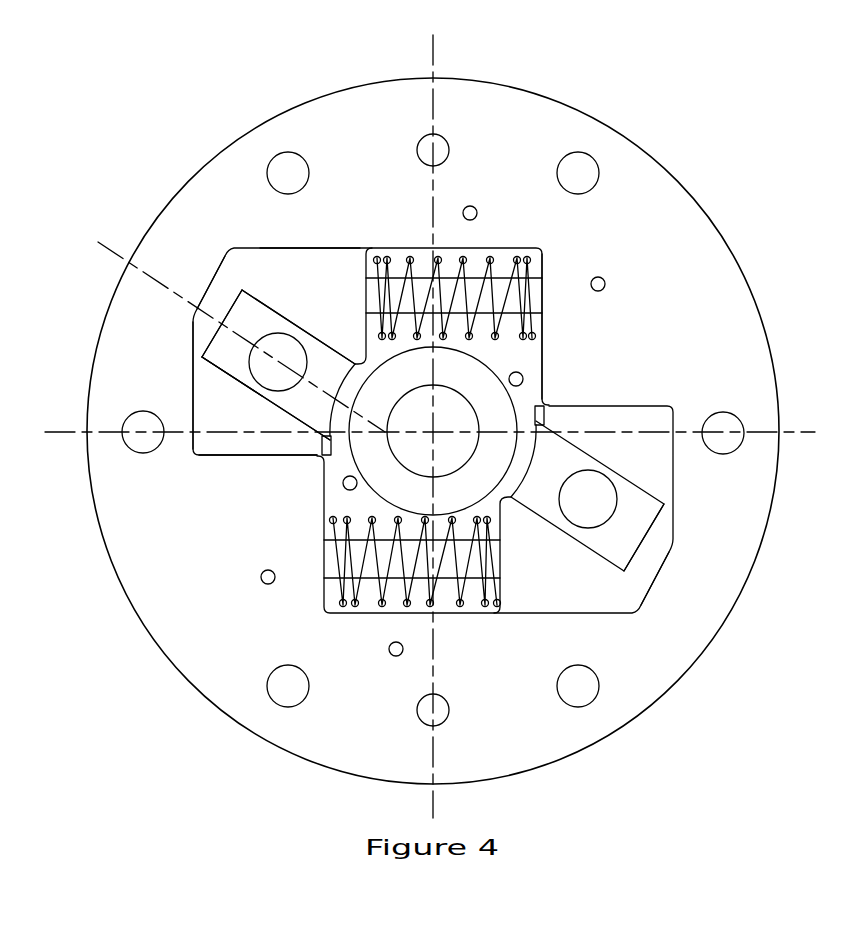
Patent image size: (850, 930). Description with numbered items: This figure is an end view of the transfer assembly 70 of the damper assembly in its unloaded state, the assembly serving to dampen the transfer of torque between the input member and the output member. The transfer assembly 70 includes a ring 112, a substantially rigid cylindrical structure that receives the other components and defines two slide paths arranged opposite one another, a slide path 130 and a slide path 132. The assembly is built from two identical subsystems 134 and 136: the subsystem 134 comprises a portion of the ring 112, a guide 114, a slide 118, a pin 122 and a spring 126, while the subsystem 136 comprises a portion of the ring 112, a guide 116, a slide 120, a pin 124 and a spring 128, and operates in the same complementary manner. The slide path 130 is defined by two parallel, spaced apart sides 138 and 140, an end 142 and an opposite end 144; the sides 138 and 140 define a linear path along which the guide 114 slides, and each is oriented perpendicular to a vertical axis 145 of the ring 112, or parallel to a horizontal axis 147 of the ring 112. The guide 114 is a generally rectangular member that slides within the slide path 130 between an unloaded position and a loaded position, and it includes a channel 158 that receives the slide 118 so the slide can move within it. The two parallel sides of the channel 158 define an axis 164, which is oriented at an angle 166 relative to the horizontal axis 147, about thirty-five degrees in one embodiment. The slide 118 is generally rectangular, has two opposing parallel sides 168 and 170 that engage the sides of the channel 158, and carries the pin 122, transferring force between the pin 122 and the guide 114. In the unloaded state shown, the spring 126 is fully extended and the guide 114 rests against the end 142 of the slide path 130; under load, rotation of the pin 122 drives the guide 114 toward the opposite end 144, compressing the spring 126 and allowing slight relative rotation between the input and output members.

The transfer assembly 70 is at (703, 208).
The ring 112 is at (648, 150).
The guide 114 is at (251, 245).
The guide 116 is at (600, 616).
The slide 118 is at (210, 338).
The slide 120 is at (657, 530).
The pin 122 is at (204, 356).
The pin 124 is at (608, 470).
The spring 126 is at (405, 258).
The spring 128 is at (398, 606).
The slide path 130 is at (498, 263).
The slide path 132 is at (473, 605).
The subsystem 134 is at (221, 257).
The subsystem 136 is at (668, 572).
The side 138 is at (318, 257).
The side 140 is at (213, 454).
The end 142 is at (194, 401).
The opposite end 144 is at (544, 373).
The vertical axis 145 is at (440, 44).
The horizontal axis 147 is at (790, 431).
The channel 158 is at (297, 411).
The axis 164 is at (99, 246).
The angle 166 is at (322, 447).
The side 168 is at (318, 338).
The side 170 is at (243, 388).